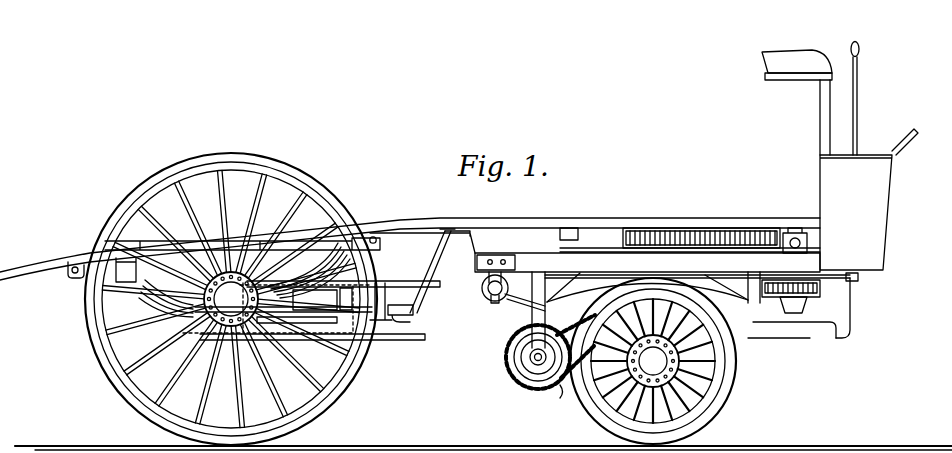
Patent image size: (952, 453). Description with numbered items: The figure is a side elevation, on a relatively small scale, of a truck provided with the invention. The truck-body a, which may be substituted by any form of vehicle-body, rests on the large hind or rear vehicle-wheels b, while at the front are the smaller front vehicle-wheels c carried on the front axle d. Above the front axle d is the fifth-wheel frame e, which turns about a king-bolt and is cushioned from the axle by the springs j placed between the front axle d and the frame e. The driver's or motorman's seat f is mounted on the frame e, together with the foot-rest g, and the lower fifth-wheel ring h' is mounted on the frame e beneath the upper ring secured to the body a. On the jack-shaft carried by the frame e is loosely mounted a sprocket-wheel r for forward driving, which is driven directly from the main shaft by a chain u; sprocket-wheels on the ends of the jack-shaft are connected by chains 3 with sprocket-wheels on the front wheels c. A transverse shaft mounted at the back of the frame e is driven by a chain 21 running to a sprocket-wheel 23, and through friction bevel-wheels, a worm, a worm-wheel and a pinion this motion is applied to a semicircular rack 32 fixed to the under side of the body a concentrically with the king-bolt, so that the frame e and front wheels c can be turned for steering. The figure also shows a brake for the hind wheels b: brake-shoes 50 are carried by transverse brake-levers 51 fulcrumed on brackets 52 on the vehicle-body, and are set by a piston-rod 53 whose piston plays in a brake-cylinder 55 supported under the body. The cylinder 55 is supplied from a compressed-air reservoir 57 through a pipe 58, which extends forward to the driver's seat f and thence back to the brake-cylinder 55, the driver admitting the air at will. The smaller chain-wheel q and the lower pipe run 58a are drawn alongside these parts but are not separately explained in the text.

The truck-body a is at (497, 218).
The hind or rear vehicle-wheels b is at (130, 209).
The front vehicle-wheels c is at (733, 382).
The front axle d is at (653, 361).
The fifth-wheel frame e is at (666, 299).
The driver's or motorman's seat f is at (800, 52).
The foot-rest g is at (916, 136).
The lower fifth-wheel ring h' is at (690, 223).
The springs j is at (775, 302).
The sprocket wheel q is at (528, 361).
The sprocket-wheel r is at (522, 372).
The chain u is at (508, 346).
The chains 3 is at (560, 398).
The chain 21 is at (520, 309).
The sprocket-wheel 23 is at (485, 297).
The semicircular rack 32 is at (730, 228).
The brake-shoes 50 is at (388, 312).
The brake-levers 51 is at (413, 311).
The brackets 52 is at (432, 262).
The piston-rod 53 is at (346, 299).
The brake-cylinder 55 is at (315, 300).
The compressed-air reservoir 57 is at (139, 270).
The pipe 58 is at (410, 281).
The lower bar 58a is at (412, 341).